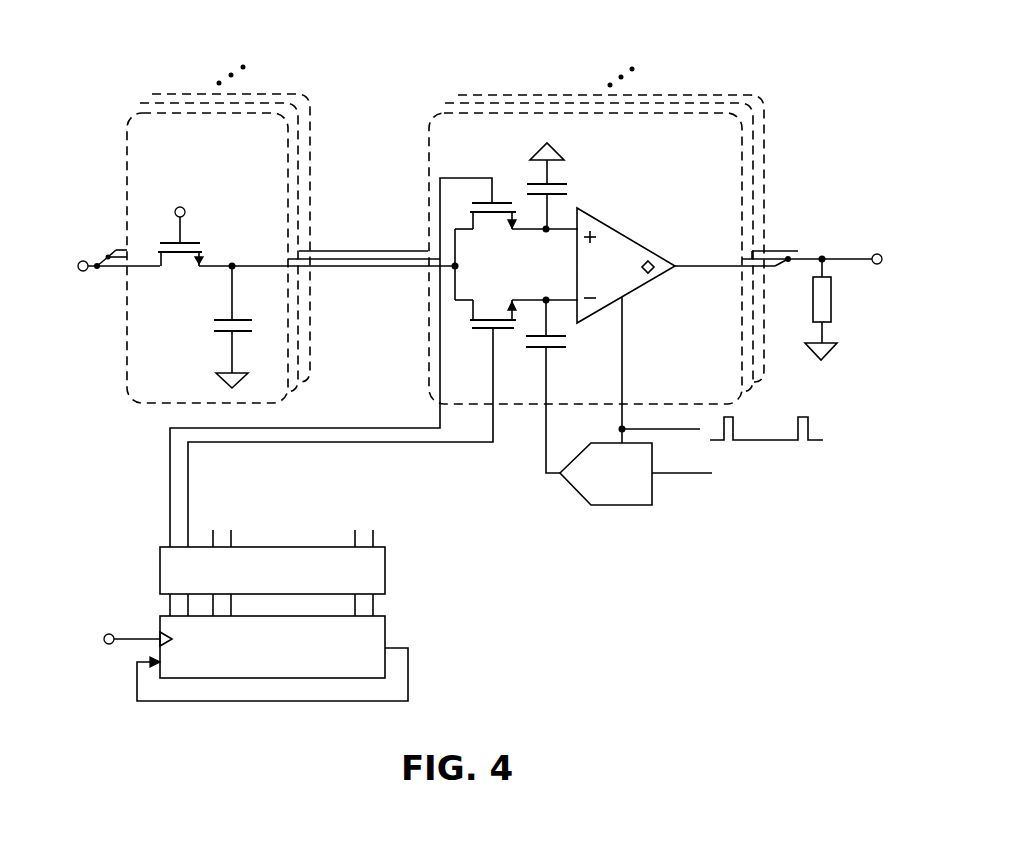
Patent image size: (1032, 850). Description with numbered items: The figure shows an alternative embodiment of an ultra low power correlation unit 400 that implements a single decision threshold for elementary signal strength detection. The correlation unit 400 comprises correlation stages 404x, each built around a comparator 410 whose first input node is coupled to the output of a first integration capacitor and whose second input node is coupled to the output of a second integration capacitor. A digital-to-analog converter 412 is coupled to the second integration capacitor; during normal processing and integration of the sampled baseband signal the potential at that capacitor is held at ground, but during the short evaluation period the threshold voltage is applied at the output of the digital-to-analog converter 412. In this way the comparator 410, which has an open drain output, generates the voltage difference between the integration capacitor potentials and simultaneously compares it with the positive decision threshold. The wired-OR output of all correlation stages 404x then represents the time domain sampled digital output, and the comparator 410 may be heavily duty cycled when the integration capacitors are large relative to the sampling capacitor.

The ultra low power correlation unit 400 is at (802, 52).
The correlation stages 404x is at (428, 100).
The comparator 410 is at (634, 228).
The digital-to-analog converter (DAC) 412 is at (594, 514).